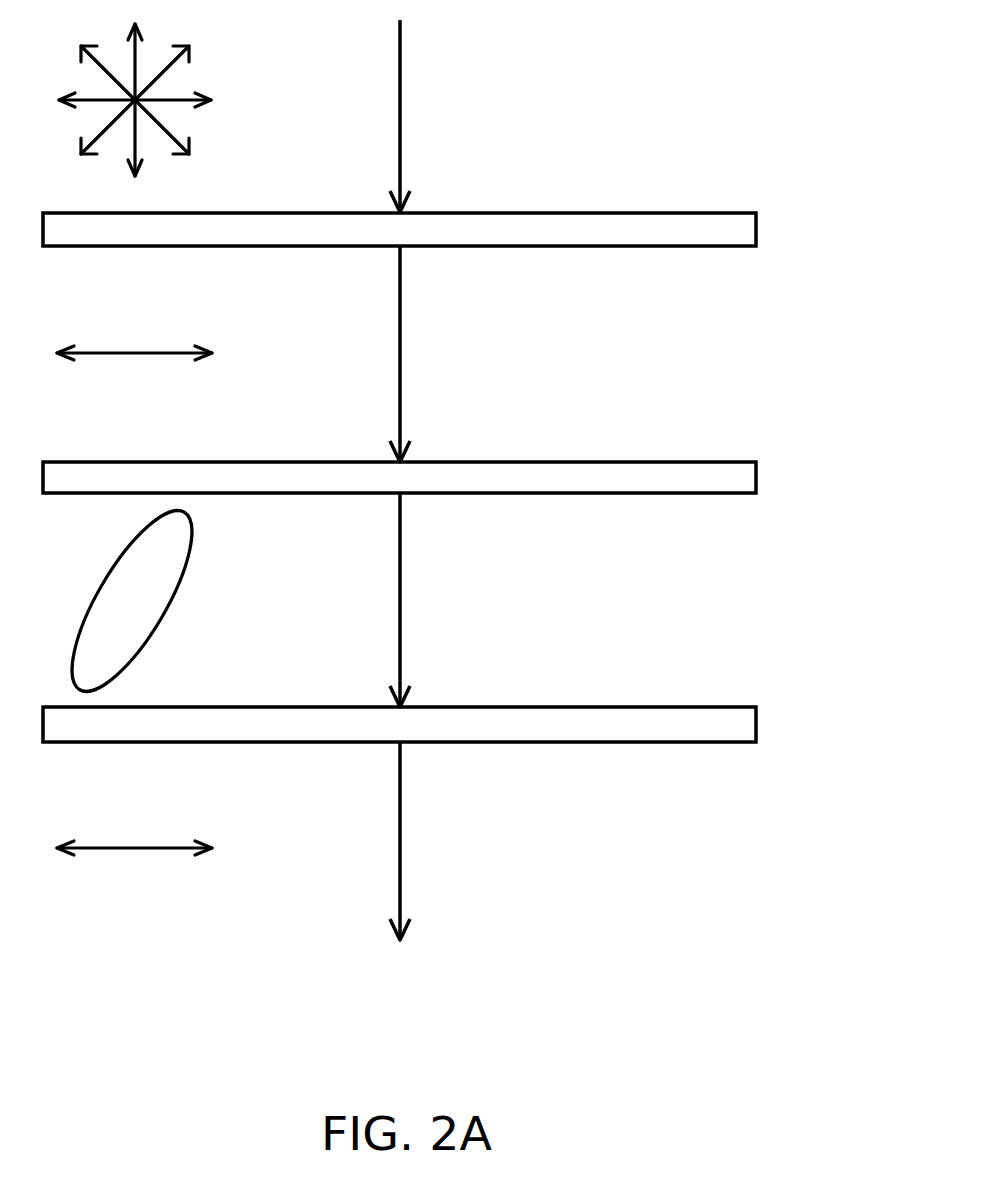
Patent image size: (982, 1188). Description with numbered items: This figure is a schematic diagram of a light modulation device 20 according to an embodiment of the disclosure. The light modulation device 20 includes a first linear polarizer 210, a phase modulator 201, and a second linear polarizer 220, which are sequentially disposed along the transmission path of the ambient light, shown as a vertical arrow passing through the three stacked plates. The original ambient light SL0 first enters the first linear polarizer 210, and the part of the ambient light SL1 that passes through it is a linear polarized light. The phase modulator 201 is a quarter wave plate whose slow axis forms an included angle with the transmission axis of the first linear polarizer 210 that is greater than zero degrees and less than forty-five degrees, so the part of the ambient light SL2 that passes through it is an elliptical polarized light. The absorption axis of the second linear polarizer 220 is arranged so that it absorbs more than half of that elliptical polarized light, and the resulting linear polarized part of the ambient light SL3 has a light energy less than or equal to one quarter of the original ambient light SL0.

The light modulation device 20 is at (439, 500).
The first linear polarizer 210 is at (756, 228).
The phase modulator 201 is at (756, 477).
The second linear polarizer 220 is at (756, 723).
The original ambient light SL0 is at (400, 137).
The part of the ambient light SL1 is at (400, 361).
The part of the ambient light SL2 is at (400, 609).
The part of the ambient light SL3 is at (400, 857).